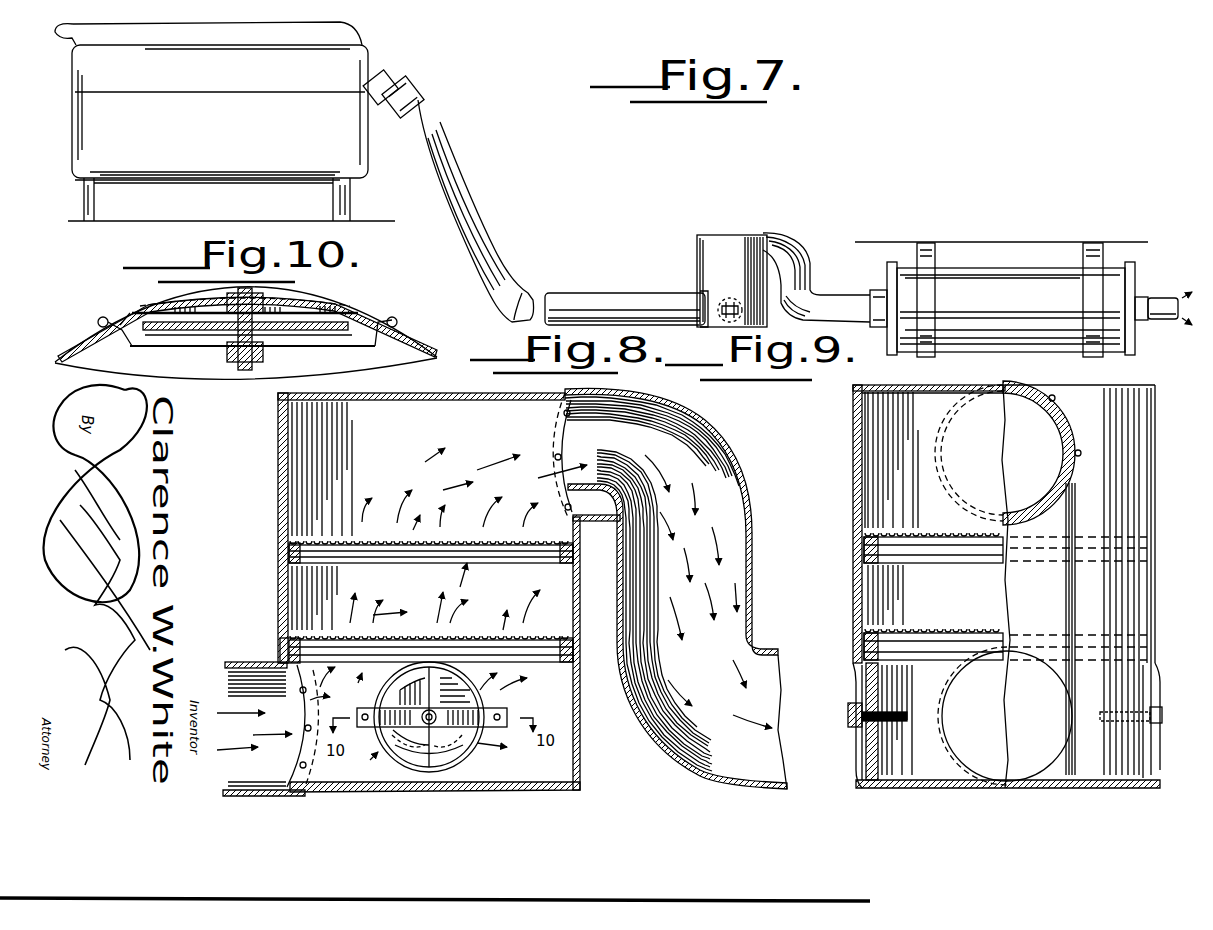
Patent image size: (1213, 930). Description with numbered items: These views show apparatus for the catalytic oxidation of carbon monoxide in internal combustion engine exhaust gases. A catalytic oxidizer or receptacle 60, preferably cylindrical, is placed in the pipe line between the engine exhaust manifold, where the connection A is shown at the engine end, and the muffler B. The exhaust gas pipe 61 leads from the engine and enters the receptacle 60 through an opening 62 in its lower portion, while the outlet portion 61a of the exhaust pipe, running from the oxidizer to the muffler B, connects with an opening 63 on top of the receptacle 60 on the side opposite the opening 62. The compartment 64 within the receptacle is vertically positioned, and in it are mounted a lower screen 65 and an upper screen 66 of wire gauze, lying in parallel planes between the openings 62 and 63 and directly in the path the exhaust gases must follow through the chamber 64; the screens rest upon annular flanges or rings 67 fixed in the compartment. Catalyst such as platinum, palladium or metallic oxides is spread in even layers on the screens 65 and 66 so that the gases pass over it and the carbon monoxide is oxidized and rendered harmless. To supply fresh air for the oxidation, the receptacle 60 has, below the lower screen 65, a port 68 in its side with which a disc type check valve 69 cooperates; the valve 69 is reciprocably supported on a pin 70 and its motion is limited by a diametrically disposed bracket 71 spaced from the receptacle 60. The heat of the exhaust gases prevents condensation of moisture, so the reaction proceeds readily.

In FIG. 7, the engine / tank A is at (340, 113).
In FIG. 7, the muffler B is at (975, 277).
In FIG. 7, the catalytic oxidizer 60 is at (712, 253).
In FIG. 10, the catalytic oxidizer 60 is at (303, 310).
In FIG. 8, the catalytic oxidizer 60 is at (485, 757).
In FIG. 9, the catalytic oxidizer 60 is at (1083, 396).
In FIG. 7, the exhaust gas pipe 61 is at (580, 305).
In FIG. 8, the exhaust gas pipe 61 is at (237, 663).
In FIG. 7, the outlet portion of the exhaust gas pipe 61a is at (800, 255).
In FIG. 8, the outlet portion of the exhaust gas pipe 61a is at (745, 470).
In FIG. 8, the opening 62 is at (280, 663).
In FIG. 9, the opening 62 is at (1060, 698).
In FIG. 8, the opening 63 is at (575, 428).
In FIG. 9, the opening 63 is at (957, 476).
In FIG. 8, the compartment 64 is at (350, 458).
In FIG. 9, the compartment 64 is at (927, 402).
In FIG. 8, the lower screen 65 is at (547, 650).
In FIG. 9, the lower screen 65 is at (940, 640).
In FIG. 8, the upper screen 66 is at (548, 550).
In FIG. 9, the upper screen 66 is at (947, 540).
In FIG. 8, the annular flanges or rings 67 is at (576, 650).
In FIG. 7, the port 68 is at (725, 320).
In FIG. 10, the check valve 69 is at (333, 327).
In FIG. 8, the check valve 69 is at (400, 738).
In FIG. 9, the check valve 69 is at (866, 690).
In FIG. 10, the pin 70 is at (245, 372).
In FIG. 9, the pin 70 is at (907, 716).
In FIG. 10, the bracket 71 is at (303, 345).
In FIG. 8, the bracket 71 is at (493, 712).